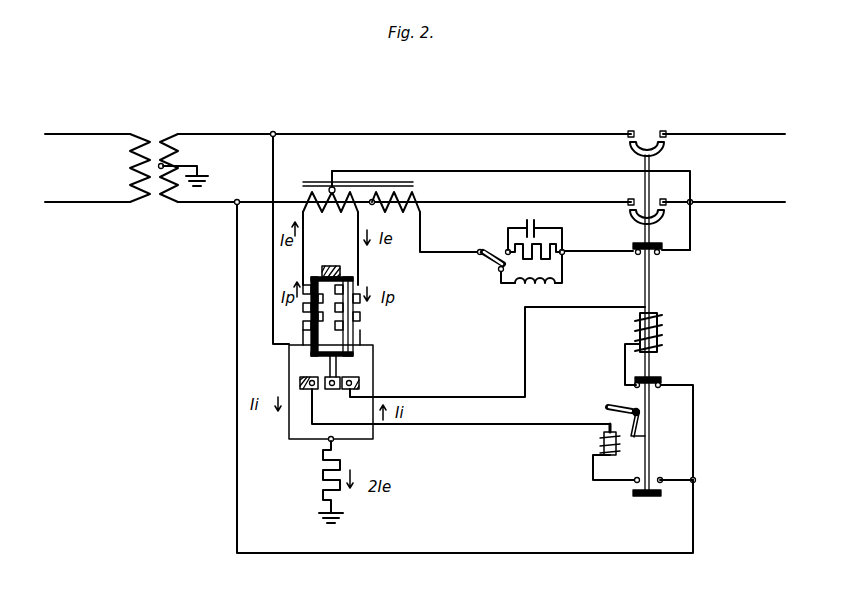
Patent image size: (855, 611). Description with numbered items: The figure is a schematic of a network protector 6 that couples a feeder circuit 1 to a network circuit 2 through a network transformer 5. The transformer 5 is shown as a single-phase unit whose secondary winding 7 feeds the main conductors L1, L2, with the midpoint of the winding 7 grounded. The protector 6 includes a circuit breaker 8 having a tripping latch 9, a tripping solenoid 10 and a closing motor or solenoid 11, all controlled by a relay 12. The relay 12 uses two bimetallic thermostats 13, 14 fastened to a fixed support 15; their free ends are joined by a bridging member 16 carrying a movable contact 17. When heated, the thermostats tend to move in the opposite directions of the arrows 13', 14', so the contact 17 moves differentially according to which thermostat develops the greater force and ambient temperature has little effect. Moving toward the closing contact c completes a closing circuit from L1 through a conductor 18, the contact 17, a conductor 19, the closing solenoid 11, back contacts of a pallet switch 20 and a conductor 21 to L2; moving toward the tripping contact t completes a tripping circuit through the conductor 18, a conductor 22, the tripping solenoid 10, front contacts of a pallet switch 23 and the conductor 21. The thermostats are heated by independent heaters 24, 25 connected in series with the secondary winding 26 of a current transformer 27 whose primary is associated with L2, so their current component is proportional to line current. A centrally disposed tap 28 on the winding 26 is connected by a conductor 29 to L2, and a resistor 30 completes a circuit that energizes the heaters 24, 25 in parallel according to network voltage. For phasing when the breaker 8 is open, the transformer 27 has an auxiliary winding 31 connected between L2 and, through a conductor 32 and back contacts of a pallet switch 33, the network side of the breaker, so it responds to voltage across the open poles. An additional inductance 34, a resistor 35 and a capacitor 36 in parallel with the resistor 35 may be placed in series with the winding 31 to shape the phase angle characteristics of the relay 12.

The feeder circuit 1 is at (74, 122).
The network circuit 2 is at (752, 140).
The network transformer 5 is at (154, 156).
The network protector 6 is at (471, 314).
The secondary winding 7 is at (180, 162).
The circuit breaker 8 is at (660, 285).
The tripping latch 9 is at (612, 406).
The tripping solenoid 10 is at (604, 448).
The closing motor or solenoid 11 is at (659, 334).
The relay 12 is at (333, 341).
The tripping thermostat 13 is at (325, 316).
The arrow 13' is at (297, 362).
The closing thermostat 14 is at (371, 316).
The arrow 14' is at (395, 351).
The fixed support 15 is at (340, 272).
The bridging member 16 is at (360, 352).
The movable electrical contact 17 is at (334, 392).
The conductor 18 is at (273, 272).
The conductor 19 is at (522, 379).
The pallet switch 20 is at (662, 378).
The conductor 21 is at (456, 566).
The conductor 22 is at (486, 436).
The pallet switch 23 is at (641, 498).
The heater 24 is at (303, 306).
The heater 25 is at (360, 306).
The secondary winding 26 is at (330, 238).
The current transformer 27 is at (296, 187).
The centrally disposed tap 28 is at (343, 222).
The conductor 29 is at (548, 163).
The resistor 30 is at (322, 478).
The auxiliary secondary winding 31 is at (414, 196).
The conductor 32 is at (483, 258).
The pallet switch 33 is at (658, 254).
The additional inductance 34 is at (558, 290).
The resistor 35 is at (540, 250).
The capacitor 36 is at (533, 226).
The main conductor L1 is at (318, 124).
The main conductor L2 is at (262, 189).